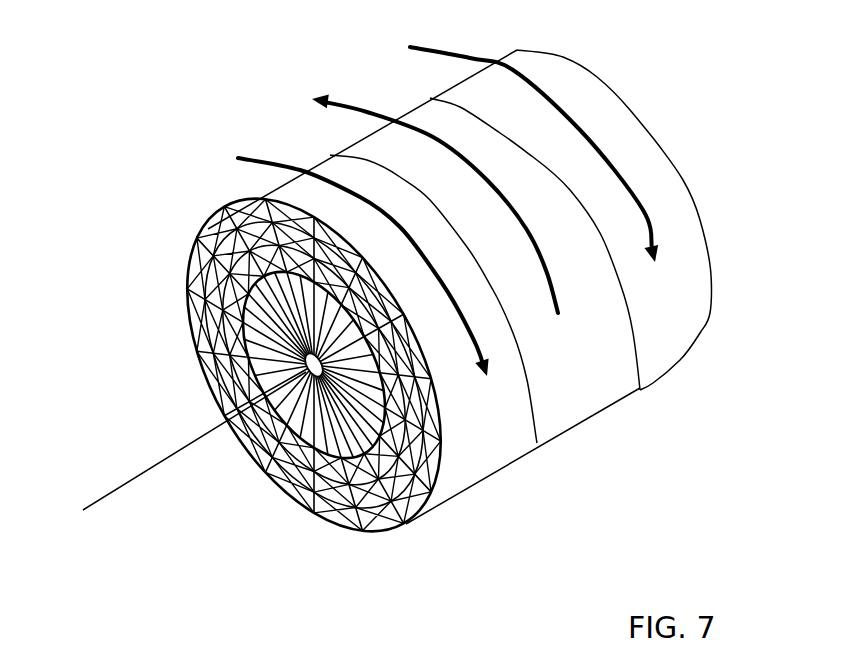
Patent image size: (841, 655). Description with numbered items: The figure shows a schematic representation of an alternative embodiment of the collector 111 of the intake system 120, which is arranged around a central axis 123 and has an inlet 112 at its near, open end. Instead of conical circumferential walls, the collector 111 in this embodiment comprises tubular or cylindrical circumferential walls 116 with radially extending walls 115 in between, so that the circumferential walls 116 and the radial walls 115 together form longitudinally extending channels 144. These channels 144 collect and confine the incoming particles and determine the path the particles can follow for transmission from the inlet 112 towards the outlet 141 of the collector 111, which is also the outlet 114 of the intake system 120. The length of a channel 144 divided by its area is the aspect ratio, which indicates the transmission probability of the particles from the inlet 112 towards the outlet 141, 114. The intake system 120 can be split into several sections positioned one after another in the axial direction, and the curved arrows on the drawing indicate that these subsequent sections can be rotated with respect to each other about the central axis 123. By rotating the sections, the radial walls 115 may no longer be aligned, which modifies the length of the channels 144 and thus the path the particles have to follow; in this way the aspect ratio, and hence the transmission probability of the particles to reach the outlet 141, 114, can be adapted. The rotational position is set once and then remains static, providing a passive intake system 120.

The intake system 120 is at (233, 66).
The outlet of the collector 141 is at (638, 116).
The outlet of the intake system 114 is at (638, 116).
The inlet of the intake system 112 is at (293, 393).
The circumferential walls 116 is at (193, 260).
The central axis 123 is at (120, 485).
The collector 111 is at (290, 427).
The channels 144 is at (332, 520).
The radial walls 115 is at (354, 528).